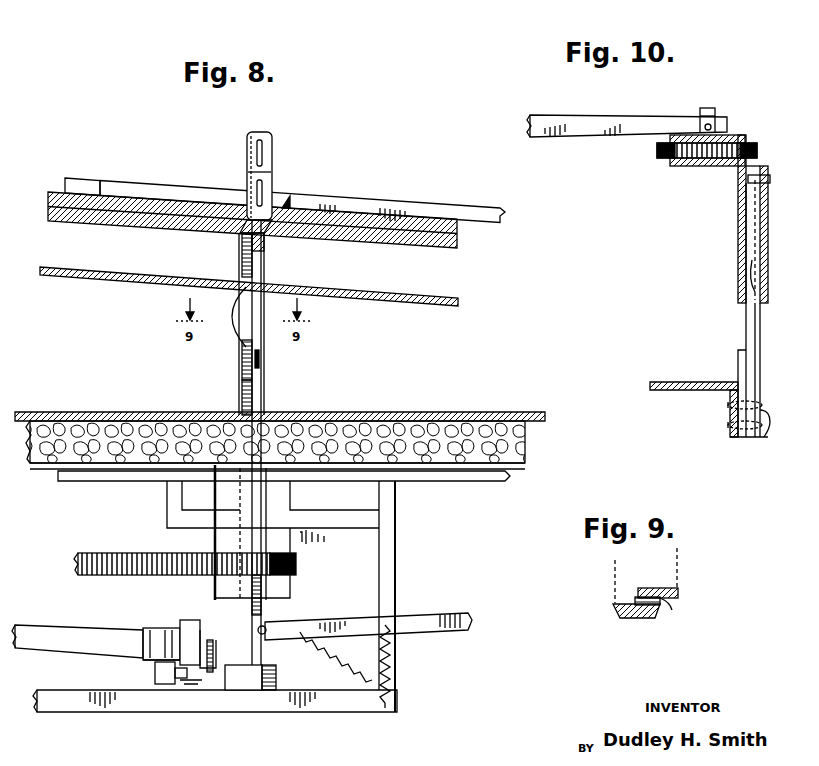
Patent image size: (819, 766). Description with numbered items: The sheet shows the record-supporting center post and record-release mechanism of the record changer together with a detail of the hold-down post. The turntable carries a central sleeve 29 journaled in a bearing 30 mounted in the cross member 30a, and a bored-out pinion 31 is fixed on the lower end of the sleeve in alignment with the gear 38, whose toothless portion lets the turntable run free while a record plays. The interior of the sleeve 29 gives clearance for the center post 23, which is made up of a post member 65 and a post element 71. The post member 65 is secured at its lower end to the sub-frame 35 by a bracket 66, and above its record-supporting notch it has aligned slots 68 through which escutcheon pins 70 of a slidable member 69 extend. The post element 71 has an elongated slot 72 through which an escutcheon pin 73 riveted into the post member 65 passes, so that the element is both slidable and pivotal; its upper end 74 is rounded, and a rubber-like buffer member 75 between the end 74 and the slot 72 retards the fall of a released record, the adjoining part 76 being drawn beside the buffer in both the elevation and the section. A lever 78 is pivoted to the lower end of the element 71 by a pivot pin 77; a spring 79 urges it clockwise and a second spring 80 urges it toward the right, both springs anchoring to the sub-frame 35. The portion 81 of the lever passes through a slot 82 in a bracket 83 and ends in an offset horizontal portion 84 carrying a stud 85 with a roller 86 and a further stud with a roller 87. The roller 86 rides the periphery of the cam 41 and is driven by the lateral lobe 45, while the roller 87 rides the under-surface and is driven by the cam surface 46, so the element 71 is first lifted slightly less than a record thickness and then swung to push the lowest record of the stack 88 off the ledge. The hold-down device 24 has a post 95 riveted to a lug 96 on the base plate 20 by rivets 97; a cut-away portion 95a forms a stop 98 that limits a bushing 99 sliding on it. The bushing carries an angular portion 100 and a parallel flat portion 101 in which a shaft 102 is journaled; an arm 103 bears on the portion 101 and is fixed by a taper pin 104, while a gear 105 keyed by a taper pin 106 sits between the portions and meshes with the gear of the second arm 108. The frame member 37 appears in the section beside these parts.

In FIG. 8, the base plate 20 is at (470, 481).
In FIG. 10, the base plate 20 is at (680, 391).
In FIG. 8, the center post 23 is at (236, 391).
In FIG. 10, the record hold-down device 24 is at (731, 222).
In FIG. 8, the central sleeve 29 is at (220, 494).
In FIG. 8, the bearing 30 is at (304, 502).
In FIG. 8, the cross member 30a is at (322, 532).
In FIG. 8, the pinion 31 is at (290, 562).
In FIG. 8, the sub-frame 35 is at (95, 716).
In FIG. 8, the frame member 37 is at (395, 555).
In FIG. 8, the gear 38 is at (138, 553).
In FIG. 8, the cam 41 is at (58, 612).
In FIG. 8, the lateral lobe 45 is at (155, 627).
In FIG. 8, the lobe on under-surface 46 is at (148, 664).
In FIG. 8, the post member 65 is at (263, 270).
In FIG. 9, the post member 65 is at (676, 590).
In FIG. 8, the bracket 66 is at (290, 688).
In FIG. 8, the aligned slots 68 is at (262, 153).
In FIG. 8, the slidable member 69 is at (288, 195).
In FIG. 8, the escutcheon pins 70 is at (247, 172).
In FIG. 8, the post element 71 is at (264, 398).
In FIG. 9, the post element 71 is at (673, 608).
In FIG. 8, the elongated slot 72 is at (243, 356).
In FIG. 8, the escutcheon pin 73 is at (261, 365).
In FIG. 8, the rounded upper end 74 is at (264, 238).
In FIG. 8, the rubber-like buffer member 75 is at (238, 313).
In FIG. 9, the rubber-like buffer member 75 is at (634, 620).
In FIG. 8, the washer 76 is at (243, 275).
In FIG. 9, the washer 76 is at (646, 608).
In FIG. 8, the pivot pin 77 is at (267, 626).
In FIG. 8, the lever 78 is at (340, 620).
In FIG. 8, the spring 79 is at (392, 662).
In FIG. 8, the second spring 80 is at (338, 640).
In FIG. 8, the portion of lever 81 is at (212, 636).
In FIG. 8, the slot 82 is at (204, 620).
In FIG. 8, the bracket 83 is at (220, 690).
In FIG. 8, the horizontal portion 84 is at (182, 682).
In FIG. 8, the stud 85 is at (192, 686).
In FIG. 8, the roller 86 is at (185, 618).
In FIG. 8, the roller 87 is at (167, 686).
In FIG. 8, the stack of records 88 is at (148, 194).
In FIG. 10, the shaft or post 95 is at (757, 382).
In FIG. 10, the cut away portion 95a is at (760, 285).
In FIG. 10, the lug 96 is at (728, 420).
In FIG. 10, the rivets 97 is at (766, 433).
In FIG. 10, the stop or ledge 98 is at (738, 350).
In FIG. 10, the bushing 99 is at (738, 258).
In FIG. 10, the angular portion 100 is at (682, 158).
In FIG. 10, the flat portion 101 is at (742, 136).
In FIG. 10, the shaft 102 is at (709, 166).
In FIG. 8, the arm 103 is at (430, 180).
In FIG. 10, the arm 103 is at (588, 119).
In FIG. 10, the taper pin 104 is at (710, 125).
In FIG. 10, the gear 105 is at (660, 154).
In FIG. 10, the taper pin 106 is at (747, 167).
In FIG. 8, the arm 108 is at (89, 177).